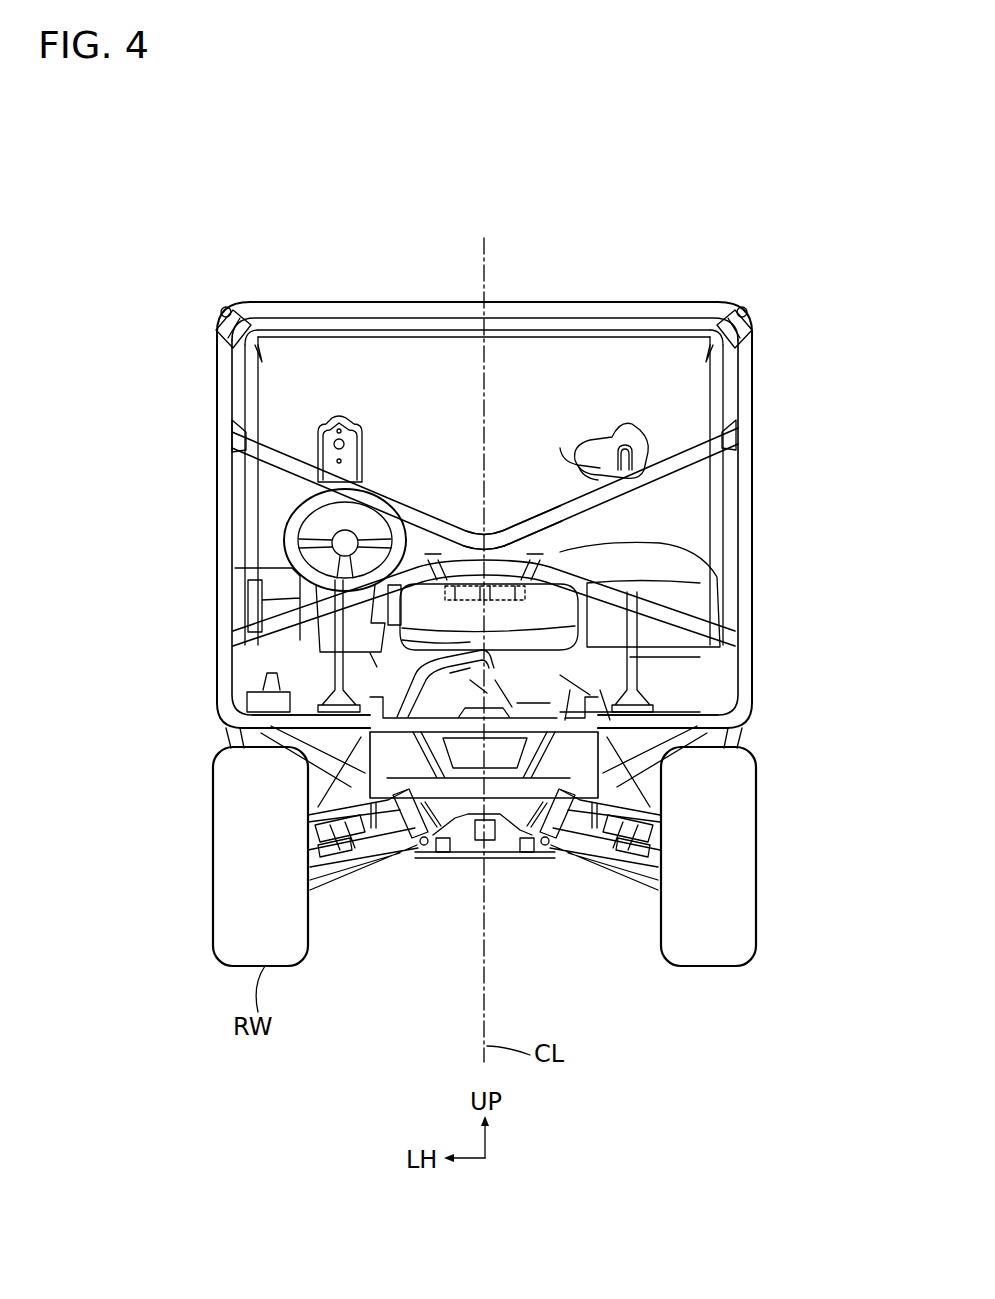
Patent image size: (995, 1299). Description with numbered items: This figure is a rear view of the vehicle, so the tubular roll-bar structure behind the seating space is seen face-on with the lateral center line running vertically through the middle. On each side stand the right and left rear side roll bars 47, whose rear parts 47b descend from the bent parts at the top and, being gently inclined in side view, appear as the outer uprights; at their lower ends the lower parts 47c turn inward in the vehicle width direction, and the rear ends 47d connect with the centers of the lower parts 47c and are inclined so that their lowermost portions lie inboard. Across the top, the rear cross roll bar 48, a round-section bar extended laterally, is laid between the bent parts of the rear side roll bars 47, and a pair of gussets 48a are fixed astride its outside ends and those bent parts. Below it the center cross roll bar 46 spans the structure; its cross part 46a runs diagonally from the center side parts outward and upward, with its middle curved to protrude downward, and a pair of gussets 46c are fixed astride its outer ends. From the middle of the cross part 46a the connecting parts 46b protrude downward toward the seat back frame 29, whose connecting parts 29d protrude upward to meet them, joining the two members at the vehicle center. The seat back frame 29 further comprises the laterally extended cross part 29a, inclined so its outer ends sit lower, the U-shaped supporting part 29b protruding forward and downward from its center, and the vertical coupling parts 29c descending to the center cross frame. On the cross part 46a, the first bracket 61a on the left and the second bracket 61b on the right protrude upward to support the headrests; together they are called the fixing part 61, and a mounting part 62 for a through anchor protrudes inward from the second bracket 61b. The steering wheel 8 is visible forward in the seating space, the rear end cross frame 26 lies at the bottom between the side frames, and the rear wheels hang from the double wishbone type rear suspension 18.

The steering wheel 8 is at (285, 525).
The rear suspension 18 is at (318, 794).
The rear end cross frame 26 is at (507, 855).
The seat back frame 29 is at (713, 598).
The cross part 29a is at (620, 590).
The supporting part 29b is at (510, 555).
The coupling parts 29c is at (638, 664).
The connecting parts 29d is at (427, 550).
The center cross roll bar 46 is at (700, 427).
The cross part 46a is at (680, 456).
The connecting parts 46b is at (558, 548).
The gussets 46c is at (736, 426).
The rear side roll bars 47 is at (768, 340).
The rear parts 47b is at (752, 495).
The lower parts 47c is at (698, 728).
The rear ends 47d is at (637, 760).
The rear cross roll bar 48 is at (632, 302).
The gussets 48a is at (732, 336).
The fixing part 61 is at (499, 430).
The first bracket 61a is at (363, 428).
The second bracket 61b is at (603, 432).
The mounting part 62 is at (575, 447).